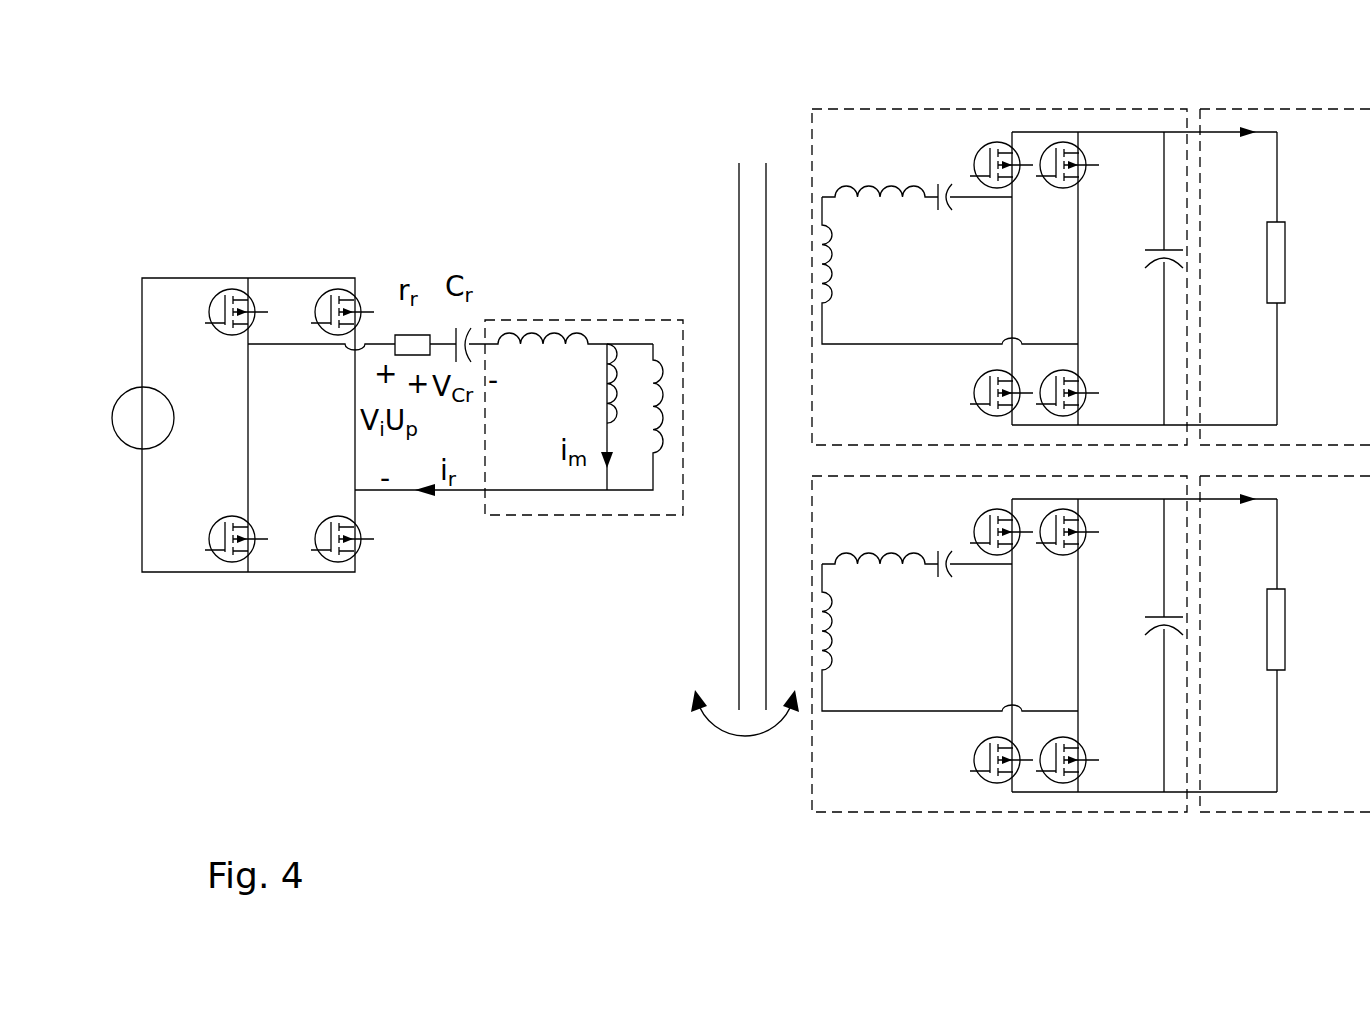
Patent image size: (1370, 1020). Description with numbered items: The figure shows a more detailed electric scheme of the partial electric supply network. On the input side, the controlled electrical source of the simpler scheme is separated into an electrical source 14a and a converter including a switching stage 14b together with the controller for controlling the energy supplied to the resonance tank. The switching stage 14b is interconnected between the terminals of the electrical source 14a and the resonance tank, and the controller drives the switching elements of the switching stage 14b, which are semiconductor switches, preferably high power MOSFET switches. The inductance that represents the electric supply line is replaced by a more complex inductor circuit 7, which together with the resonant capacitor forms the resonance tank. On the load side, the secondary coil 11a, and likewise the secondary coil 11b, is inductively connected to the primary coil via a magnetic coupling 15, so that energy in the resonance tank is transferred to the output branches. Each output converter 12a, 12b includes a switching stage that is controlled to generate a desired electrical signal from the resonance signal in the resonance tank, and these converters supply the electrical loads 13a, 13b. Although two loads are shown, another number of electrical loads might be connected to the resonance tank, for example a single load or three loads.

The inductor circuit 7 is at (630, 320).
The secondary coil 11a is at (880, 157).
The secondary coil 11b is at (880, 720).
The output converter 12a is at (1061, 128).
The output converter 12b is at (1061, 797).
The electrical load 13a is at (1332, 109).
The electrical load 13b is at (1332, 812).
The electrical source 14a is at (112, 418).
The switching stage 14b is at (292, 580).
The magnetic coupling 15 is at (751, 157).